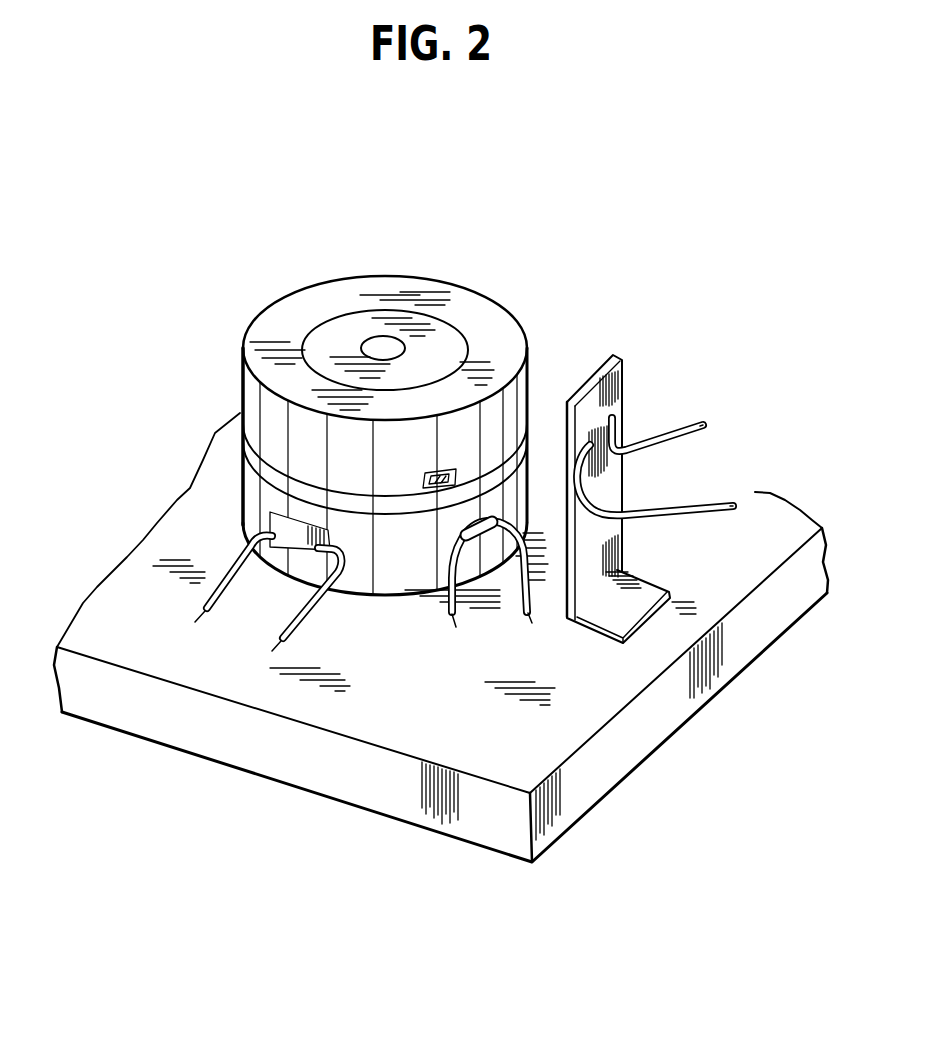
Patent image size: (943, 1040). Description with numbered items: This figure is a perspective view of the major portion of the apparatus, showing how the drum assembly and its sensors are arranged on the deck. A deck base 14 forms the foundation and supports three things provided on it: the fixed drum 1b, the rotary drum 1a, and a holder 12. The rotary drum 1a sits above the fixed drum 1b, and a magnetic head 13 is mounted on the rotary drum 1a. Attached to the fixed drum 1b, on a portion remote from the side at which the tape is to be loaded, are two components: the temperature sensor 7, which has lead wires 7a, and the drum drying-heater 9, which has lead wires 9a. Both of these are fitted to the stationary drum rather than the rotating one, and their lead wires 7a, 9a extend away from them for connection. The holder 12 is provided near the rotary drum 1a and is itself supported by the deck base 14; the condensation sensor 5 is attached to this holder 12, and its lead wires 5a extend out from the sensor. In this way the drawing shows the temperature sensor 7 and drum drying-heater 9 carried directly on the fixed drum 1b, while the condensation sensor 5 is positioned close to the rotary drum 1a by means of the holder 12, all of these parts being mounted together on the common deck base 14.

The rotary drum 1a is at (483, 298).
The fixed drum 1b is at (250, 497).
The condensation sensor 5 is at (614, 417).
The lead wires 5a is at (712, 500).
The temperature sensor 7 is at (490, 516).
The lead wires 7a is at (460, 606).
The drum drying-heater 9 is at (268, 522).
The lead wires 9a is at (280, 627).
The holder 12 is at (622, 354).
The magnetic head 13 is at (424, 472).
The deck base 14 is at (758, 642).